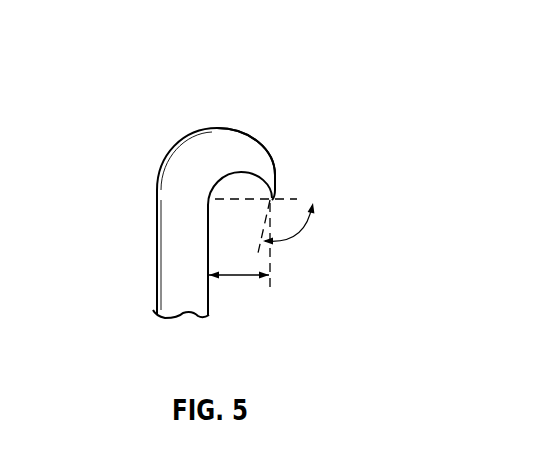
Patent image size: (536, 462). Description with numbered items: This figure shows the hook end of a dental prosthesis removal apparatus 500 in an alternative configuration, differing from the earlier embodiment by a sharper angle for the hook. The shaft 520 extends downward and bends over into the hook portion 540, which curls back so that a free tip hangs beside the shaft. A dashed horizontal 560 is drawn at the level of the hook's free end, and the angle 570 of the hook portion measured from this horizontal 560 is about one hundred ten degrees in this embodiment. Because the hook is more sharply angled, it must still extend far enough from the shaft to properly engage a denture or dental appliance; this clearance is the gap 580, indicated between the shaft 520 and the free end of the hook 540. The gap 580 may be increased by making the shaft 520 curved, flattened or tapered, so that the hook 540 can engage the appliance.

The hook-shaped member 500 is at (155, 108).
The shaft 520 is at (158, 258).
The hook portion 540 is at (259, 129).
The horizontal 560 is at (292, 199).
The angle 570 is at (298, 233).
The gap 580 is at (238, 275).